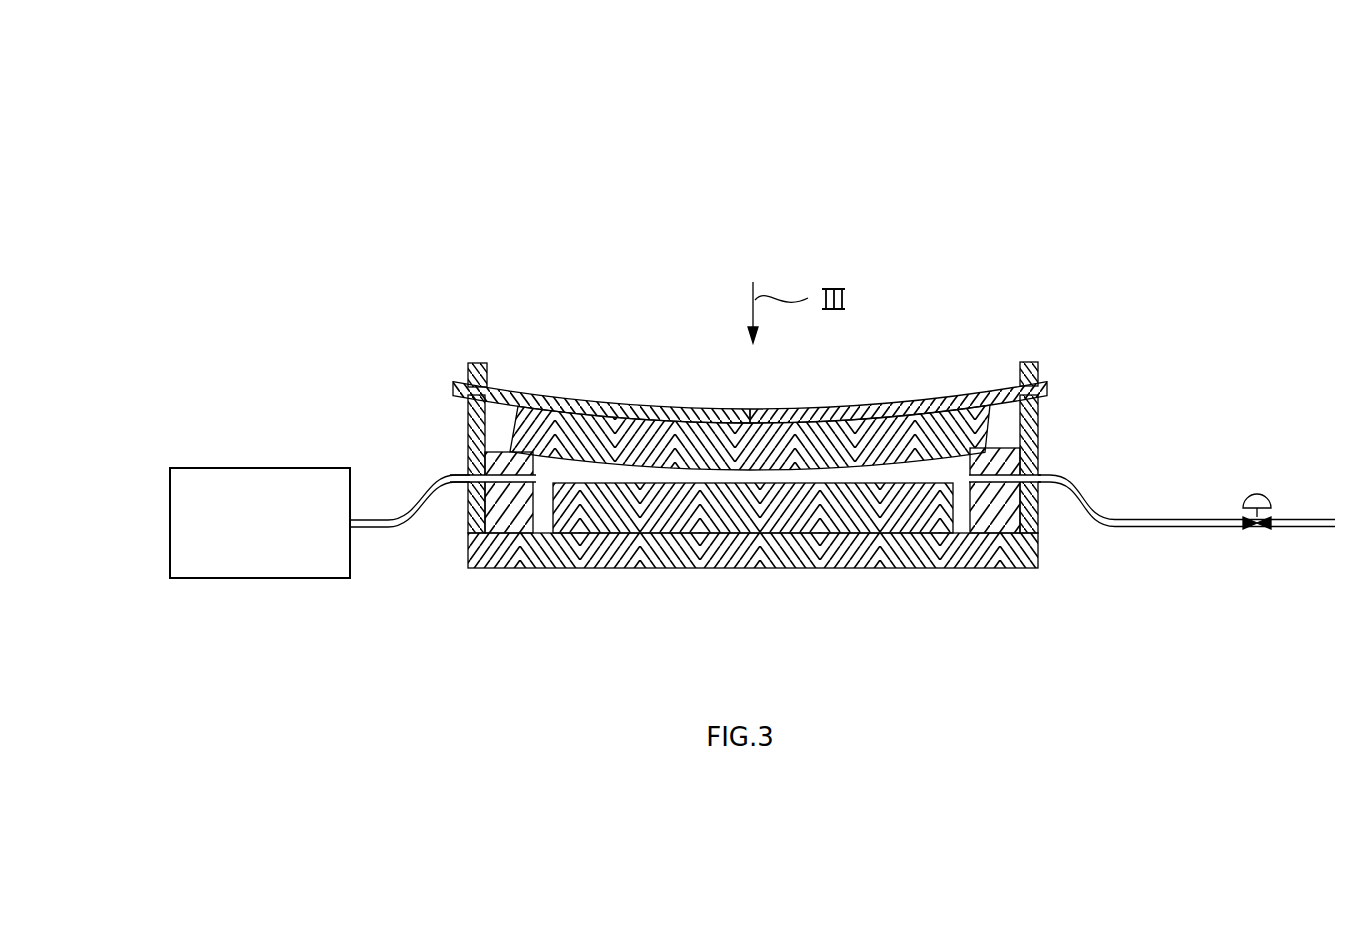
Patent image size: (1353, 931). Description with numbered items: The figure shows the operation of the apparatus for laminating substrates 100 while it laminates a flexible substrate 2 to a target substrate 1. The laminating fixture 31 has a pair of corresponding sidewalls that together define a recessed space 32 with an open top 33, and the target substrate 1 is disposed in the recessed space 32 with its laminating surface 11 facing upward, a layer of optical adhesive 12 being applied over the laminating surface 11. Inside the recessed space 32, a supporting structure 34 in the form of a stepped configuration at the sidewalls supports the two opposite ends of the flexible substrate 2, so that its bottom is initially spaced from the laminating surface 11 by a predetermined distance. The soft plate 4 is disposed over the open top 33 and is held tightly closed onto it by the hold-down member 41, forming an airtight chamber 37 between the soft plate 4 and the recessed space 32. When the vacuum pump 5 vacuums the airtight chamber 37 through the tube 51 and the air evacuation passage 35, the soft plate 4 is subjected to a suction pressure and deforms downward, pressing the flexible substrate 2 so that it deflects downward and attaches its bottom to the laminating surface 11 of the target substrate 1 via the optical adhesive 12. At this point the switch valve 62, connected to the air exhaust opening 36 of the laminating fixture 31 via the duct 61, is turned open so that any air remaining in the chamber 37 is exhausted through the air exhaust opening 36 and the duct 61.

The apparatus for laminating substrates 100 is at (1148, 211).
The target substrate 1 is at (753, 568).
The laminating surface 11 is at (753, 568).
The optical adhesive 12 is at (637, 485).
The flexible substrate 2 is at (888, 404).
The laminating fixture 31 is at (1010, 557).
The recessed space 32 is at (958, 522).
The open top 33 is at (945, 378).
The supporting structure 34 is at (1040, 448).
The air evacuation passage 35 is at (505, 510).
The air exhaust opening 36 is at (1040, 495).
The airtight chamber 37 is at (490, 380).
The soft plate 4 is at (1048, 388).
The hold-down member 41 is at (1028, 362).
The vacuum pump 5 is at (170, 486).
The tube 51 is at (381, 528).
The duct 61 is at (1167, 528).
The switch valve 62 is at (1258, 530).